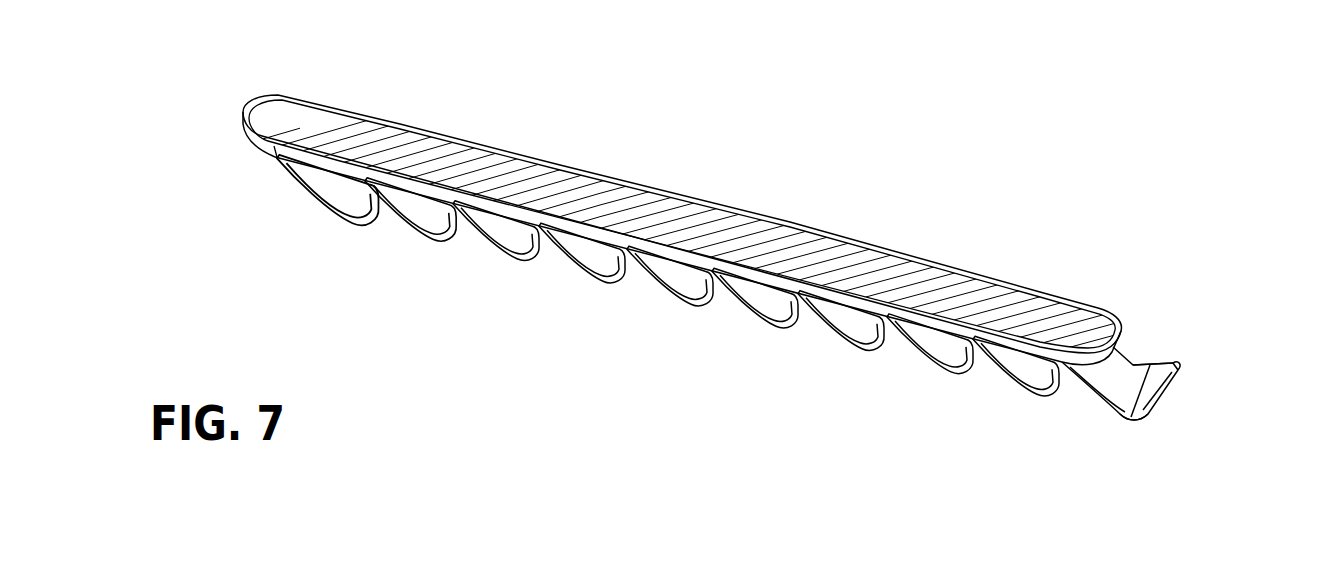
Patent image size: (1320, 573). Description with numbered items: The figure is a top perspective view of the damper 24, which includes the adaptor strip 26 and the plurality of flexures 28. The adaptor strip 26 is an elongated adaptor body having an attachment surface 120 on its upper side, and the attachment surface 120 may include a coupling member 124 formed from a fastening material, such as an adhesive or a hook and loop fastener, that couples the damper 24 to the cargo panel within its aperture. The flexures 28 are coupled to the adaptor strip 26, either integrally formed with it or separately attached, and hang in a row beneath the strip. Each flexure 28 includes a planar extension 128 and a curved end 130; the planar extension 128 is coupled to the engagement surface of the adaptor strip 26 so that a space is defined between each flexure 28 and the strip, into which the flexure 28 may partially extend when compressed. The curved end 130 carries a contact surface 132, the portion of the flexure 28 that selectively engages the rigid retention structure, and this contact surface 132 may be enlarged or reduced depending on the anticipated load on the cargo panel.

The damper 24 is at (300, 90).
The adaptor strip 26 is at (815, 232).
The flexures 28 is at (335, 216).
The attachment surface 120 is at (252, 120).
The coupling member 124 is at (573, 186).
The planar extension 128 is at (1133, 362).
The curved end 130 is at (1147, 422).
The contact surface 132 is at (1163, 383).